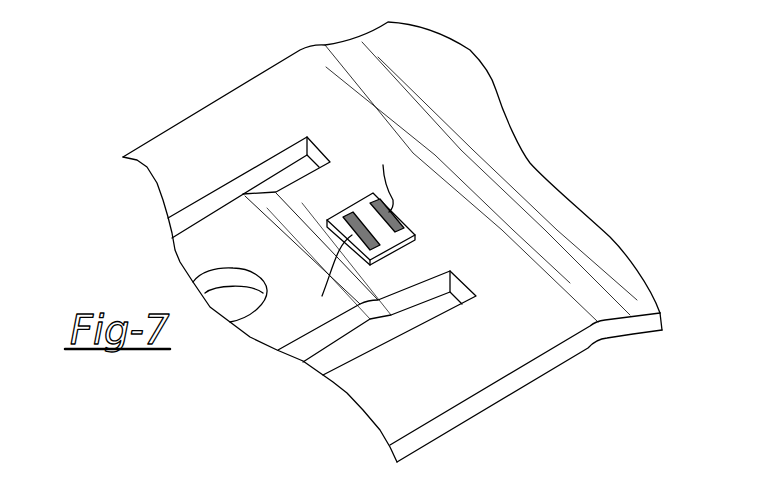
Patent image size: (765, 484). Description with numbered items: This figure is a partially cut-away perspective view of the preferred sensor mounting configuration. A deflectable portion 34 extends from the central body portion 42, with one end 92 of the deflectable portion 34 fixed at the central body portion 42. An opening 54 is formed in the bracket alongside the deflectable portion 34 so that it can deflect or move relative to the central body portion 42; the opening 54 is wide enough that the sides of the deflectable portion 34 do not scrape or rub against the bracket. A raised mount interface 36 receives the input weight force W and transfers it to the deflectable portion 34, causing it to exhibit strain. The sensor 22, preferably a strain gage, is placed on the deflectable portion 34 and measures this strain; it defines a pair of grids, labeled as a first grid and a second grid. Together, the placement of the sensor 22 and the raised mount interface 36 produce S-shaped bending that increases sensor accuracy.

The sensor 22 is at (403, 210).
The deflectable portion 34 is at (268, 185).
The mount interface 36 is at (205, 250).
The central body portion 42 is at (473, 92).
The opening 54 is at (393, 335).
The end of the deflectable portion 92 is at (447, 237).